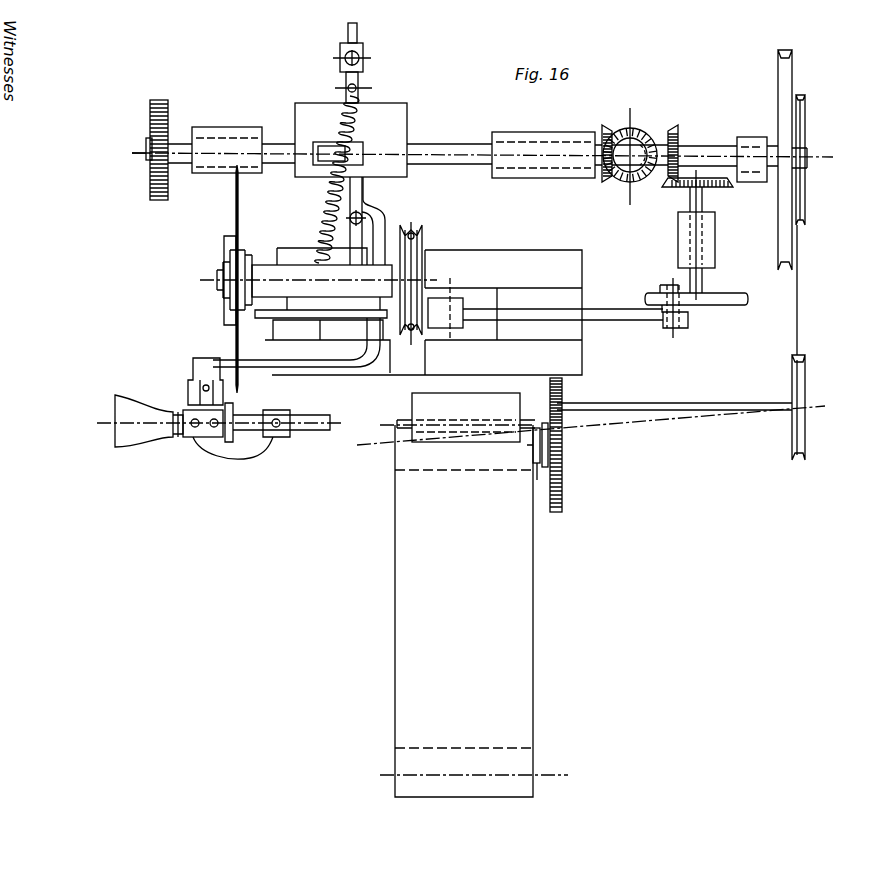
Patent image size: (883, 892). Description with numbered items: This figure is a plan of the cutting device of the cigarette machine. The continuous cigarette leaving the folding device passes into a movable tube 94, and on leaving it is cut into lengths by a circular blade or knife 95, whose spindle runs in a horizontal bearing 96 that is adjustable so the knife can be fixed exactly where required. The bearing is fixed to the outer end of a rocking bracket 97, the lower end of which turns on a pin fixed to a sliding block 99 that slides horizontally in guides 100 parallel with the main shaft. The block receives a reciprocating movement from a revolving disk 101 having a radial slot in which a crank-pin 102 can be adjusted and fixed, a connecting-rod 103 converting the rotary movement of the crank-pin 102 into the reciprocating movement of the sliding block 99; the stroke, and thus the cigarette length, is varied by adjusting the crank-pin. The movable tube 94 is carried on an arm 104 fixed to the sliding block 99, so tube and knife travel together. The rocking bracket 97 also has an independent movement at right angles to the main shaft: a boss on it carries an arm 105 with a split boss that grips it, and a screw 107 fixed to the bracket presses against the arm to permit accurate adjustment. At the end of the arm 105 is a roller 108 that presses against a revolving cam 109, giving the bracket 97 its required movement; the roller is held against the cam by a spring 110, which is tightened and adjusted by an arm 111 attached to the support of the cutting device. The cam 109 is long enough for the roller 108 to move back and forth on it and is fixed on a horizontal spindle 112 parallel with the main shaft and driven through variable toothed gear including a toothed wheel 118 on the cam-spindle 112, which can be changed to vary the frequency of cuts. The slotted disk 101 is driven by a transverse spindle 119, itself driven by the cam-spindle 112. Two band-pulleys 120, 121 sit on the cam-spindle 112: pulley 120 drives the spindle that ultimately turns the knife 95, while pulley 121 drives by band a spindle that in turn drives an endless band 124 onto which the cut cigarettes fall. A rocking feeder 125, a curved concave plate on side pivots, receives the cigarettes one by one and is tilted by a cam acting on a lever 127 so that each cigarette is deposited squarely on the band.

The movable tube 94 is at (115, 424).
The circular blade or knife 95 is at (235, 197).
The horizontal bearing 96 is at (248, 264).
The rocking bracket 97 is at (344, 310).
The sliding block 99 is at (466, 300).
The guides 100 is at (566, 252).
The revolving disk 101 is at (738, 305).
The crank-pin 102 is at (660, 292).
The connecting-rod 103 is at (590, 323).
The arm 104 is at (365, 369).
The arm 105 is at (364, 184).
The screw 107 is at (364, 217).
The roller 108 is at (330, 144).
The revolving cam 109 is at (398, 106).
The spring 110 is at (327, 201).
The arm 111 is at (358, 30).
The horizontal spindle 112 is at (467, 143).
The toothed wheel 118 is at (150, 176).
The transverse spindle 119 is at (707, 196).
The band-pulley 120 is at (780, 88).
The band-pulley 121 is at (806, 113).
The endless band 124 is at (395, 575).
The rocking feeder 125 is at (438, 393).
The lever 127 is at (537, 466).